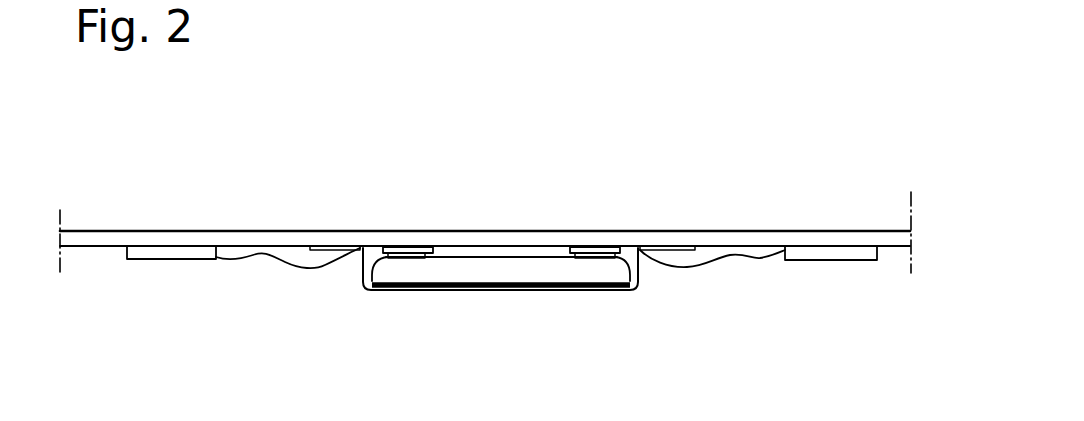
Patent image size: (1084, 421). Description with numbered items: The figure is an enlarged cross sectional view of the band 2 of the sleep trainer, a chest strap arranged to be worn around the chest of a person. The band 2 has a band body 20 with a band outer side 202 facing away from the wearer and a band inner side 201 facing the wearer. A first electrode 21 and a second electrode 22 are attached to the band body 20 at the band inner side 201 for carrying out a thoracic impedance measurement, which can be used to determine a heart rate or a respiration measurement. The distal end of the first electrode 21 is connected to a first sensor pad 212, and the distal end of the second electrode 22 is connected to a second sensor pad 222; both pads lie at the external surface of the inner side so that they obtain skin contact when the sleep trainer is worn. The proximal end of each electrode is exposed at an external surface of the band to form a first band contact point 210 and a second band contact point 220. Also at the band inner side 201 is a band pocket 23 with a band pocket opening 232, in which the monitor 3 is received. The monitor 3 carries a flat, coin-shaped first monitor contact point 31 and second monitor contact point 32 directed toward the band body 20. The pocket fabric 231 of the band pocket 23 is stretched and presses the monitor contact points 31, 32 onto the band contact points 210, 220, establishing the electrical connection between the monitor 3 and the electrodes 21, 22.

The band 2 is at (862, 222).
The band body 20 is at (485, 241).
The band inner side 201 is at (88, 247).
The band outer side 202 is at (97, 230).
The first electrode 21 is at (268, 257).
The first band contact point 210 is at (413, 248).
The first sensor pad 212 is at (190, 259).
The second electrode 22 is at (728, 258).
The second band contact point 220 is at (598, 248).
The second sensor pad 222 is at (818, 253).
The band pocket 23 is at (522, 303).
The pocket fabric 231 is at (587, 290).
The band pocket opening 232 is at (517, 257).
The monitor 3 is at (538, 258).
The first monitor contact point 31 is at (402, 258).
The second monitor contact point 32 is at (632, 252).